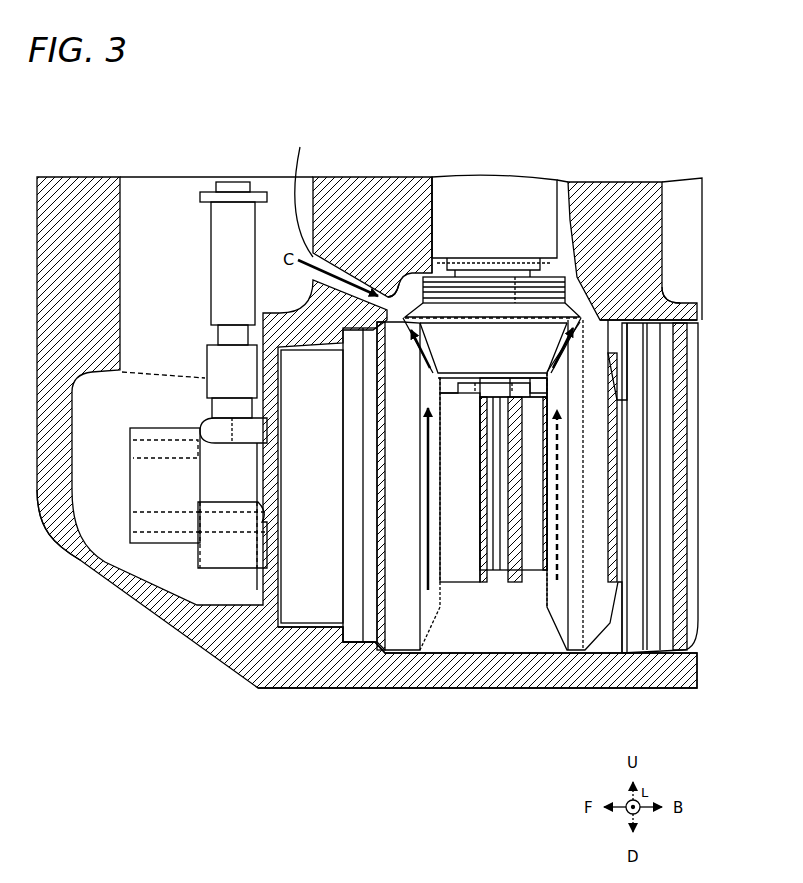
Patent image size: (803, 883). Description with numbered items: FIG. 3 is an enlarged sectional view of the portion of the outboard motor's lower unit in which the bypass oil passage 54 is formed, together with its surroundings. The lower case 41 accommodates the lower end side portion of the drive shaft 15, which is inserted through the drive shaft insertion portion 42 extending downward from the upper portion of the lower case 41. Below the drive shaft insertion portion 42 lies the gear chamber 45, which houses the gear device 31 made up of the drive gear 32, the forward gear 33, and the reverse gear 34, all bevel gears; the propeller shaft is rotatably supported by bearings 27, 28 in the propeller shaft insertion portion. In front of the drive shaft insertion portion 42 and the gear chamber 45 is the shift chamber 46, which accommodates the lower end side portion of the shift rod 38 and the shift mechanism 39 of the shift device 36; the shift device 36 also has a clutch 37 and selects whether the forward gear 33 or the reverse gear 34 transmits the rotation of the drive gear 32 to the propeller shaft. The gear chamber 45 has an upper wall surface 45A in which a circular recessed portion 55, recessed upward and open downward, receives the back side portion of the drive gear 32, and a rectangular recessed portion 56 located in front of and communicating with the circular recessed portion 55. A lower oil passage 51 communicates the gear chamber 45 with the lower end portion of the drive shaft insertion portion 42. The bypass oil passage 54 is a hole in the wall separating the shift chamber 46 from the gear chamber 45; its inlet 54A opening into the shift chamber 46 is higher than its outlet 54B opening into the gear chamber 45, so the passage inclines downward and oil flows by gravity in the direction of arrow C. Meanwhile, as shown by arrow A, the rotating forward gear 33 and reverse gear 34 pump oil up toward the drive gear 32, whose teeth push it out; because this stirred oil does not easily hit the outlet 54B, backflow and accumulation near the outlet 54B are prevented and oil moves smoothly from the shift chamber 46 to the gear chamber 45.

The drive shaft 15 is at (482, 190).
The bearing 27 is at (353, 622).
The bearing 28 is at (637, 632).
The gear device 31 is at (320, 642).
The drive gear 32 is at (502, 350).
The forward gear 33 is at (428, 612).
The reverse gear 34 is at (550, 612).
The shift device 36 is at (110, 518).
The clutch 37 is at (470, 585).
The shift rod 38 is at (220, 245).
The shift mechanism 39 is at (238, 492).
The lower case 41 is at (45, 530).
The drive shaft insertion portion 42 is at (570, 192).
The gear chamber 45 is at (513, 622).
The upper wall surface 45A is at (667, 320).
The shift chamber 46 is at (152, 218).
The lower oil passage 51 is at (637, 343).
The bypass oil passage 54 is at (338, 272).
The inlet 54A is at (307, 191).
The outlet 54B is at (396, 282).
The circular recessed portion 55 is at (597, 265).
The rectangular recessed portion 56 is at (418, 250).